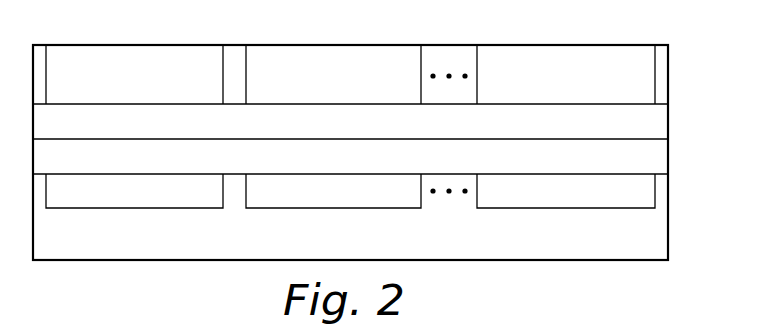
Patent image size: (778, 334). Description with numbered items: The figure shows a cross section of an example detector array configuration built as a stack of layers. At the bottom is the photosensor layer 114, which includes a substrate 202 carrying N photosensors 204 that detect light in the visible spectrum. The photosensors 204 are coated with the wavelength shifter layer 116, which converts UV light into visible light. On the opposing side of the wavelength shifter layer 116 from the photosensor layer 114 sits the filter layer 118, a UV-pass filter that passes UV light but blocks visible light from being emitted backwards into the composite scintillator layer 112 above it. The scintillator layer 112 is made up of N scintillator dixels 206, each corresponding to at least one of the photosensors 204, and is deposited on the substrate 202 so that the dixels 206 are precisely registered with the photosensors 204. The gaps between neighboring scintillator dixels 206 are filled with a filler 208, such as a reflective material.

The composite scintillator layer 112 is at (668, 77).
The photosensor layer 114 is at (668, 232).
The wavelength shifter layer 116 is at (668, 158).
The filter layer 118 is at (668, 121).
The substrate 202 is at (238, 240).
The photosensors 204 is at (588, 208).
The scintillator dixels 206 is at (580, 48).
The filler 208 is at (450, 45).